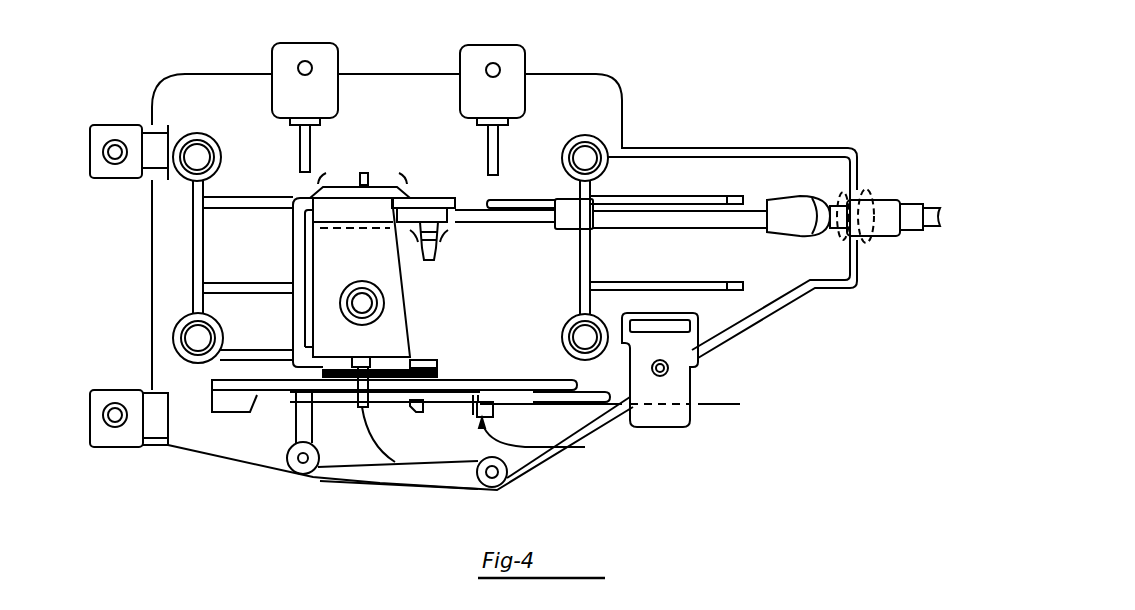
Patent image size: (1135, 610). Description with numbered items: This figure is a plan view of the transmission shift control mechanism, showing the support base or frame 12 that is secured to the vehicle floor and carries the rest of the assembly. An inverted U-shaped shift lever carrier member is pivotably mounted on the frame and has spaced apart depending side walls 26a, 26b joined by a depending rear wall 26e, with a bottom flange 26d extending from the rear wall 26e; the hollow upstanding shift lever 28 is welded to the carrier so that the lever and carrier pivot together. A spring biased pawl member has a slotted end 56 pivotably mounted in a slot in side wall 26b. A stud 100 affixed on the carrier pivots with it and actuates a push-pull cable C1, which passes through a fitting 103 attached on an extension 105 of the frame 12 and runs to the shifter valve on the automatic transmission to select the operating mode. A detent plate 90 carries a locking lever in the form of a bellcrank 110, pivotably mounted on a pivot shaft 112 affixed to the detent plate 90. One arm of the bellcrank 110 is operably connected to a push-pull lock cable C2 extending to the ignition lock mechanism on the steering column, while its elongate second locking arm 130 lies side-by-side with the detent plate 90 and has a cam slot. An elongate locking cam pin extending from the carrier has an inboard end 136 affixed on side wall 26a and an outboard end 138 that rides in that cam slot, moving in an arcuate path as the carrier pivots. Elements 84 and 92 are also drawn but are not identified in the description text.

The support base or frame 12 is at (235, 452).
The depending side wall 26a is at (440, 373).
The depending side wall 26b is at (430, 197).
The bottom flange 26d is at (408, 328).
The depending rear wall 26e is at (293, 250).
The shift lever 28 is at (385, 295).
The slotted end 56 is at (368, 166).
The link 84 is at (343, 470).
The detent plate 90 is at (473, 398).
The mounting tab 92 is at (580, 390).
The stud 100 is at (440, 236).
The fitting 103 is at (803, 198).
The extension 105 is at (858, 195).
The bellcrank 110 is at (523, 445).
The pivot shaft 112 is at (512, 430).
The second locking arm 130 is at (472, 395).
The inboard end 136 is at (432, 362).
The outboard end 138 is at (420, 405).
The push-pull cable C1 is at (512, 215).
The push-pull lock cable C2 is at (723, 406).